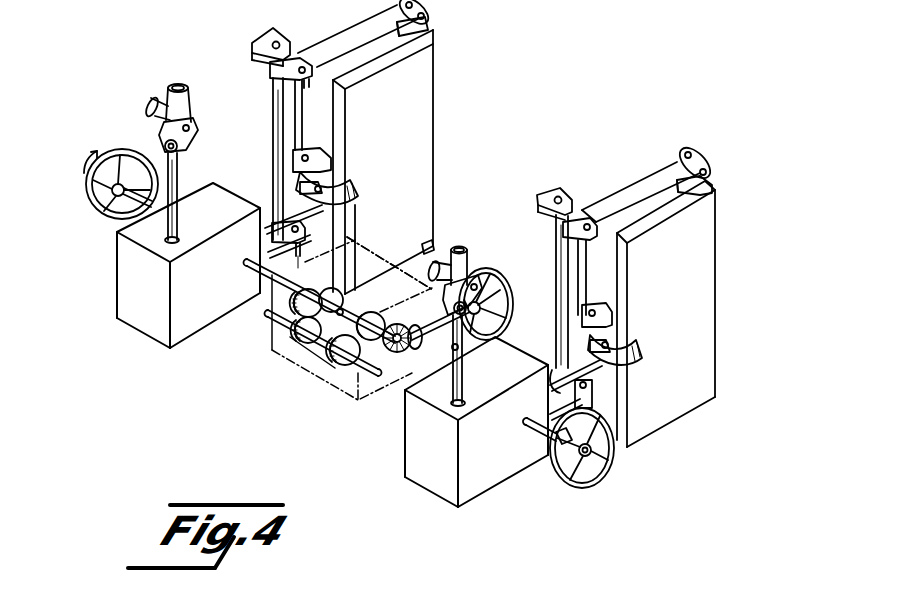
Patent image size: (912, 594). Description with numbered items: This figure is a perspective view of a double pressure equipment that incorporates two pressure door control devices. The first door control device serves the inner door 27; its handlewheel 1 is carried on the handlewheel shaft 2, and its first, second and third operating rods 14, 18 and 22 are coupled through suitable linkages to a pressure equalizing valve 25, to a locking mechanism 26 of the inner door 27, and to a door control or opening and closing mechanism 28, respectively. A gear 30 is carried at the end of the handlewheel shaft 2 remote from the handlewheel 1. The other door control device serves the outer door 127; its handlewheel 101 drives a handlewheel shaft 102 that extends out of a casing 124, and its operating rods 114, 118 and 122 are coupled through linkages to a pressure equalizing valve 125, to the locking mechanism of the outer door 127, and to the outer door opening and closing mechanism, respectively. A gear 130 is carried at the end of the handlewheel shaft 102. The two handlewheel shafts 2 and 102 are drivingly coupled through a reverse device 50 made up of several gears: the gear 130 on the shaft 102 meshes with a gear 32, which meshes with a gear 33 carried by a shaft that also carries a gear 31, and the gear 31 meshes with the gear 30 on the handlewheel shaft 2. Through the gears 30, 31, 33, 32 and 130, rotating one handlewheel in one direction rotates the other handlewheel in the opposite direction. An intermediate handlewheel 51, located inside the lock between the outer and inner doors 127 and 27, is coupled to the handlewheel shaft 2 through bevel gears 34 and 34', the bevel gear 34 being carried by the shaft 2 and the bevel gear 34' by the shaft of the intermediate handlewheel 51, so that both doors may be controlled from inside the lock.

The handlewheel 1 is at (613, 458).
The handlewheel shaft 2 is at (535, 432).
The first operating rod 14 is at (448, 400).
The second operating rod 18 is at (598, 370).
The third operating rod 22 is at (557, 470).
The pressure equalizing valve 25 is at (473, 262).
The locking mechanism 26 is at (613, 333).
The inner door 27 is at (703, 252).
The door control or opening and closing mechanism 28 is at (702, 153).
The gear 30 is at (375, 323).
The gear 31 is at (338, 375).
The gear 32 is at (271, 339).
The gear 33 is at (296, 360).
The bevel gear 34 is at (396, 379).
The bevel gear 34' is at (484, 355).
The reverse device 50 is at (337, 413).
The intermediate handlewheel 51 is at (500, 277).
The handlewheel 101 is at (88, 190).
The handlewheel shaft 102 is at (252, 270).
The operating rod 114 is at (180, 162).
The operating rod 118 is at (272, 190).
The operating rod 122 is at (347, 217).
The casing 124 is at (137, 332).
The pressure equalizing valve 125 is at (190, 102).
The outer door 127 is at (437, 76).
The gear 130 is at (362, 266).